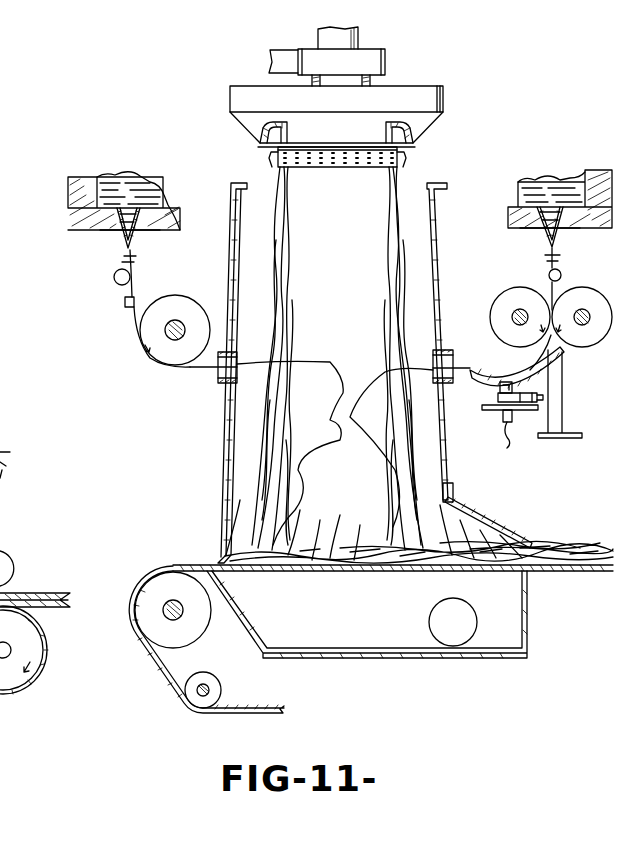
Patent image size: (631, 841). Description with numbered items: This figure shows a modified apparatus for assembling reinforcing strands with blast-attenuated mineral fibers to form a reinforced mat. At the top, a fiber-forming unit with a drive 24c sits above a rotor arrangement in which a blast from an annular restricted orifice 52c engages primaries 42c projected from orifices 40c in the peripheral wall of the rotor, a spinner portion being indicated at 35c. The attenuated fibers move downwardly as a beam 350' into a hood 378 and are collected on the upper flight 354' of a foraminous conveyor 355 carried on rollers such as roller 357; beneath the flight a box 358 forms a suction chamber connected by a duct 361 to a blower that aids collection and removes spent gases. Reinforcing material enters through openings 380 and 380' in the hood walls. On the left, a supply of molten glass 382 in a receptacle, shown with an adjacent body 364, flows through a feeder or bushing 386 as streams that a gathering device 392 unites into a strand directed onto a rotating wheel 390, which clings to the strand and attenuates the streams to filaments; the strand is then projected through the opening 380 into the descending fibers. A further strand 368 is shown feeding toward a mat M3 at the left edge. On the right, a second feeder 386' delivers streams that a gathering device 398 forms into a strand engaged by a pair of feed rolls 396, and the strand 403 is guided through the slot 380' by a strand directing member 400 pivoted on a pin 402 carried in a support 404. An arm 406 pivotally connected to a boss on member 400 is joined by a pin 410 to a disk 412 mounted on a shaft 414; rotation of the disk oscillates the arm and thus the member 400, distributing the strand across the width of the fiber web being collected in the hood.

The pump drive motor 24c is at (360, 41).
The annular restricted orifice 52c is at (411, 135).
The primaries 42c is at (262, 157).
The spinneret 35c is at (306, 163).
The orifices 40c is at (352, 153).
The beam of fibers 350' is at (374, 359).
The hood 378 is at (433, 220).
The molten glass supply 382 is at (138, 152).
The hopper block 364 is at (77, 208).
The feeder or bushing 386 is at (148, 235).
The feeder 386' is at (564, 215).
The filament gathering device 392 is at (125, 301).
The rotating wheel or disk 390 is at (162, 365).
The opening 380 is at (251, 448).
The slot 380' is at (467, 341).
The strand 368 is at (0, 456).
The mat M3 is at (32, 593).
The upper flight of foraminous conveyor 354' is at (341, 518).
The conveyor 355 is at (252, 712).
The roller 357 is at (190, 641).
The receptacle or box 358 is at (330, 658).
The duct 361 is at (455, 647).
The gathering device or guide means 398 is at (549, 272).
The pull or feed rolls 396 is at (585, 293).
The pin 402 is at (560, 374).
The strand 403 is at (471, 361).
The support 404 is at (548, 422).
The strand directing member 400 is at (530, 377).
The arm or link 406 is at (498, 398).
The pin 410 is at (530, 390).
The disk 412 is at (500, 410).
The shaft 414 is at (508, 442).